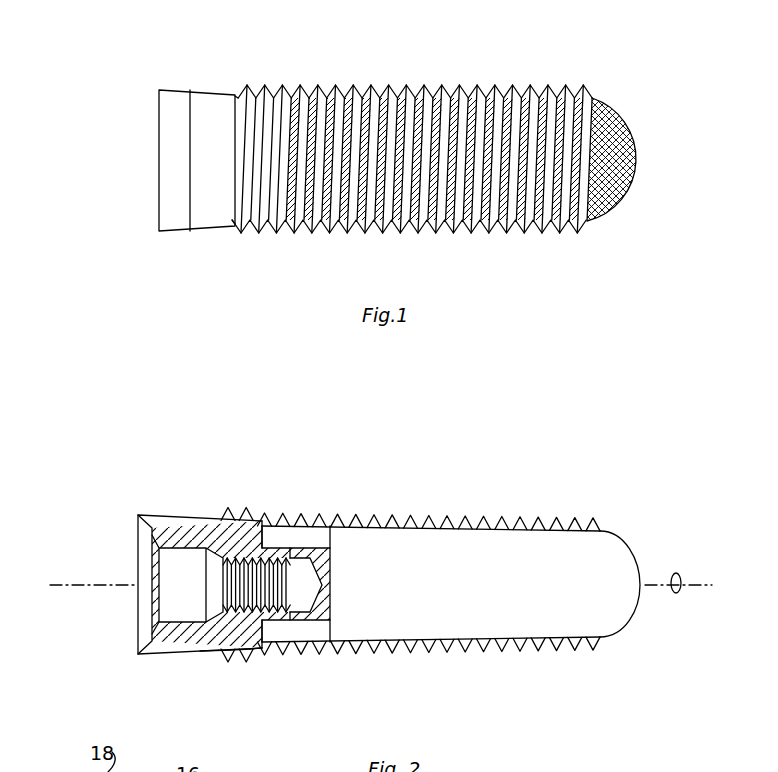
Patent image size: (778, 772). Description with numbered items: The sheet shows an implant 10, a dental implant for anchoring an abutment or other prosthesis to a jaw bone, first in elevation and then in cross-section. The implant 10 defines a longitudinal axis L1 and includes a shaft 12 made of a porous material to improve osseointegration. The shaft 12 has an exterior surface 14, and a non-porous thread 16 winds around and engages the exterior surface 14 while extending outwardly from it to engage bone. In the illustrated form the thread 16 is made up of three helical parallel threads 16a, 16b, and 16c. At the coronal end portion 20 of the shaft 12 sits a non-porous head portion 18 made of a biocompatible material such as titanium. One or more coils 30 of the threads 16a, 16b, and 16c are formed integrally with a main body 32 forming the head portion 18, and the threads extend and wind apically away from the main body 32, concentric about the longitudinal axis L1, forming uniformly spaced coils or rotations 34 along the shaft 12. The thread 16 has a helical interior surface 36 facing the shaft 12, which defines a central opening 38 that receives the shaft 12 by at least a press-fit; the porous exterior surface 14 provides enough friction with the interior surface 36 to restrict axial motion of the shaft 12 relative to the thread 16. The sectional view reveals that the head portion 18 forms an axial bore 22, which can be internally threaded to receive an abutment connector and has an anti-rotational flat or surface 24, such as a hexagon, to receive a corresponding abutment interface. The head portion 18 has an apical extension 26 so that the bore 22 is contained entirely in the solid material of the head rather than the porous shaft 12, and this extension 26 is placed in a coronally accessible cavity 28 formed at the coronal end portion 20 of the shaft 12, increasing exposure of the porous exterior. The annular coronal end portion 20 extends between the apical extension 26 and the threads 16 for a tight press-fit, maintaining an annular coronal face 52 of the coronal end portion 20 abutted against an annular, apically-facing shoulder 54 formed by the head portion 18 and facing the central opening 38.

In FIG. 1, the implant 10 is at (584, 66).
In FIG. 2, the implant 10 is at (579, 473).
In FIG. 1, the shaft 12 is at (421, 149).
In FIG. 2, the shaft 12 is at (448, 579).
In FIG. 1, the exterior surface 14 is at (605, 110).
In FIG. 2, the exterior surface 14 is at (522, 653).
In FIG. 1, the non-porous thread 16 is at (583, 226).
In FIG. 2, the helical parallel thread 16a is at (215, 655).
In FIG. 2, the helical parallel thread 16b is at (240, 656).
In FIG. 2, the helical parallel thread 16c is at (262, 660).
In FIG. 1, the non-porous head portion 18 is at (188, 155).
In FIG. 2, the non-porous head portion 18 is at (210, 597).
In FIG. 1, the coronal end portion 20 is at (437, 151).
In FIG. 2, the coronal end portion 20 is at (449, 578).
In FIG. 2, the axial bore 22 is at (258, 548).
In FIG. 2, the anti-rotational flat or surface 24 is at (170, 528).
In FIG. 2, the apical extension 26 is at (320, 622).
In FIG. 2, the coronally accessible cavity 28 is at (351, 578).
In FIG. 1, the coils 30 is at (257, 90).
In FIG. 2, the coils 30 is at (228, 511).
In FIG. 1, the main body 32 is at (207, 232).
In FIG. 2, the main body 32 is at (185, 653).
In FIG. 1, the coils or rotations 34 is at (481, 92).
In FIG. 2, the coils or rotations 34 is at (503, 515).
In FIG. 2, the interior surface 36 is at (545, 520).
In FIG. 2, the central opening 38 is at (598, 641).
In FIG. 2, the annular coronal face 52 is at (270, 648).
In FIG. 2, the apically-facing shoulder 54 is at (290, 526).
In FIG. 2, the longitudinal axis L1 is at (680, 596).